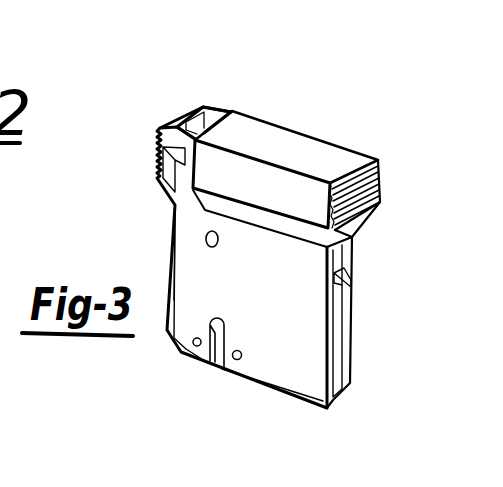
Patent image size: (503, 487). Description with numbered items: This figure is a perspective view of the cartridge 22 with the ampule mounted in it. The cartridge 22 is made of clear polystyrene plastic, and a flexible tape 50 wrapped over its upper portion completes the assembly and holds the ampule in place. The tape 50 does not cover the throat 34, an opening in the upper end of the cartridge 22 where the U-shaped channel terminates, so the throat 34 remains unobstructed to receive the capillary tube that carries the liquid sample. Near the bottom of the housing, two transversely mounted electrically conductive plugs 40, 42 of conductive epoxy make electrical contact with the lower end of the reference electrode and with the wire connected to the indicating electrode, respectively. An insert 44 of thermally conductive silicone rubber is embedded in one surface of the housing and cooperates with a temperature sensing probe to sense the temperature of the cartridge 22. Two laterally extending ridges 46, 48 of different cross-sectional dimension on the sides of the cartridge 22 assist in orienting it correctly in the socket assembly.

The cartridge 22 is at (313, 317).
The throat 34 is at (207, 122).
The electrically conductive plug 40 is at (237, 361).
The electrically conductive plug 42 is at (195, 349).
The insert 44 is at (207, 233).
The ridge 46 is at (347, 343).
The ridge 48 is at (170, 251).
The flexible tape 50 is at (247, 132).